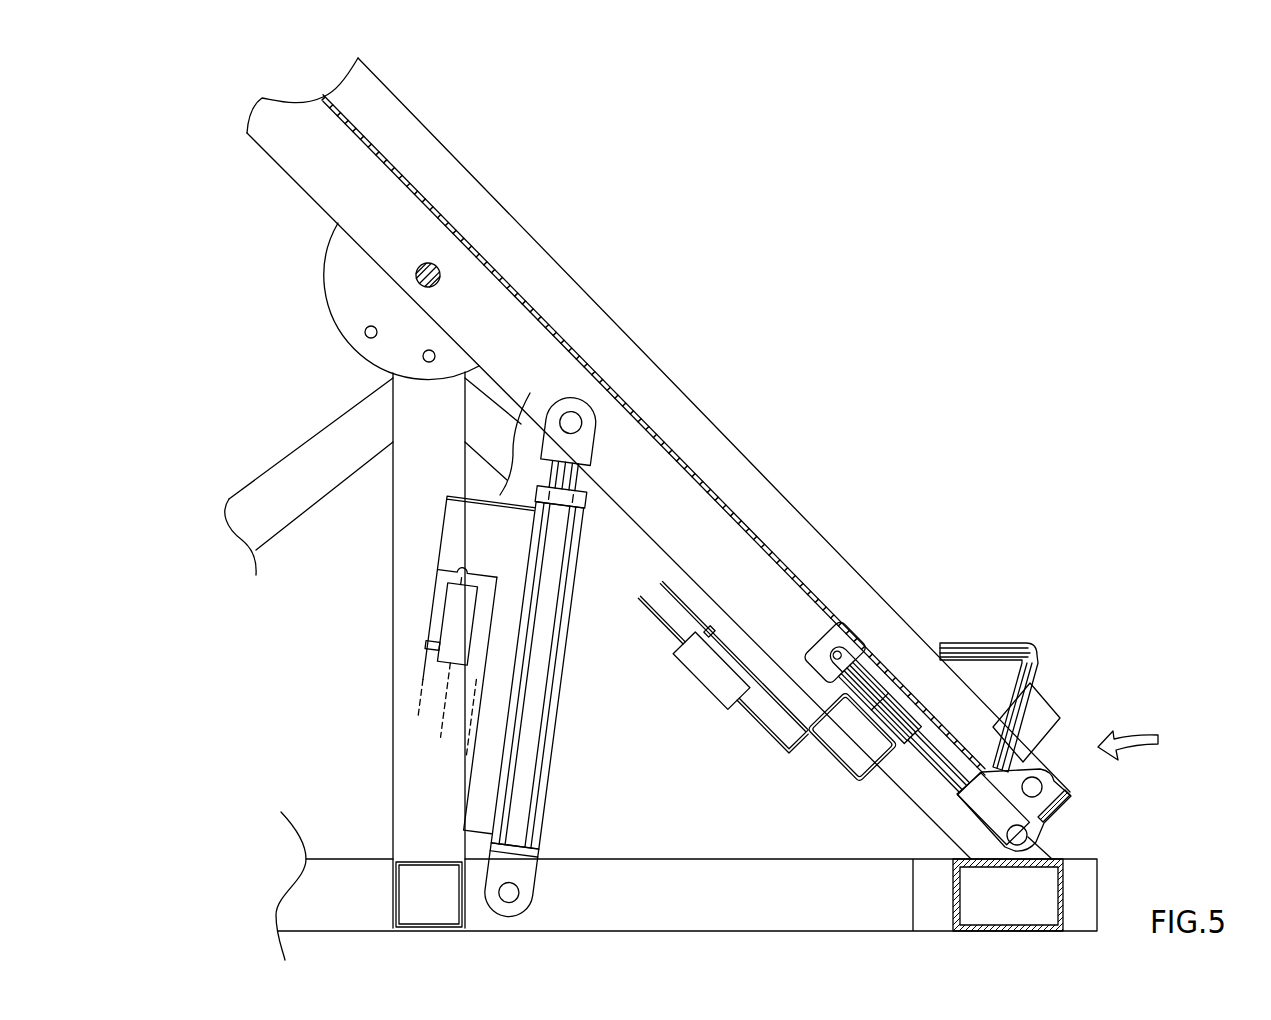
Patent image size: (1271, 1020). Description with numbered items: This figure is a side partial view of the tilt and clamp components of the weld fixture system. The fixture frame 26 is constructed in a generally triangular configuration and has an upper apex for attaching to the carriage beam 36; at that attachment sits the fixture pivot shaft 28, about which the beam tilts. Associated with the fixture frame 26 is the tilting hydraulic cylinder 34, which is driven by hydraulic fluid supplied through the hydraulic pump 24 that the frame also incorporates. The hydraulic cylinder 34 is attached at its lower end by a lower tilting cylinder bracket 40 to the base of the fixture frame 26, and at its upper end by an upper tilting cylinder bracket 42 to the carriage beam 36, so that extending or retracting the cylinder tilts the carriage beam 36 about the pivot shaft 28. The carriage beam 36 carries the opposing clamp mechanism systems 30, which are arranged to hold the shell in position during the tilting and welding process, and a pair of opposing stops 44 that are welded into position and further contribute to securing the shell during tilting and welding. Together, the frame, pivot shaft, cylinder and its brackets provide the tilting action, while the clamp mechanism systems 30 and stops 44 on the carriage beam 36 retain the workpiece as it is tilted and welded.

The hydraulic pump 24 is at (412, 622).
The fixture frame 26 is at (913, 803).
The fixture pivot shaft 28 is at (414, 268).
The clamp mechanism system 30 is at (1142, 743).
The tilting hydraulic cylinder 34 is at (550, 747).
The carriage beam 36 is at (752, 467).
The lower tilting cylinder bracket 40 is at (507, 917).
The upper tilting cylinder bracket 42 is at (583, 407).
The stop 44 is at (1058, 714).